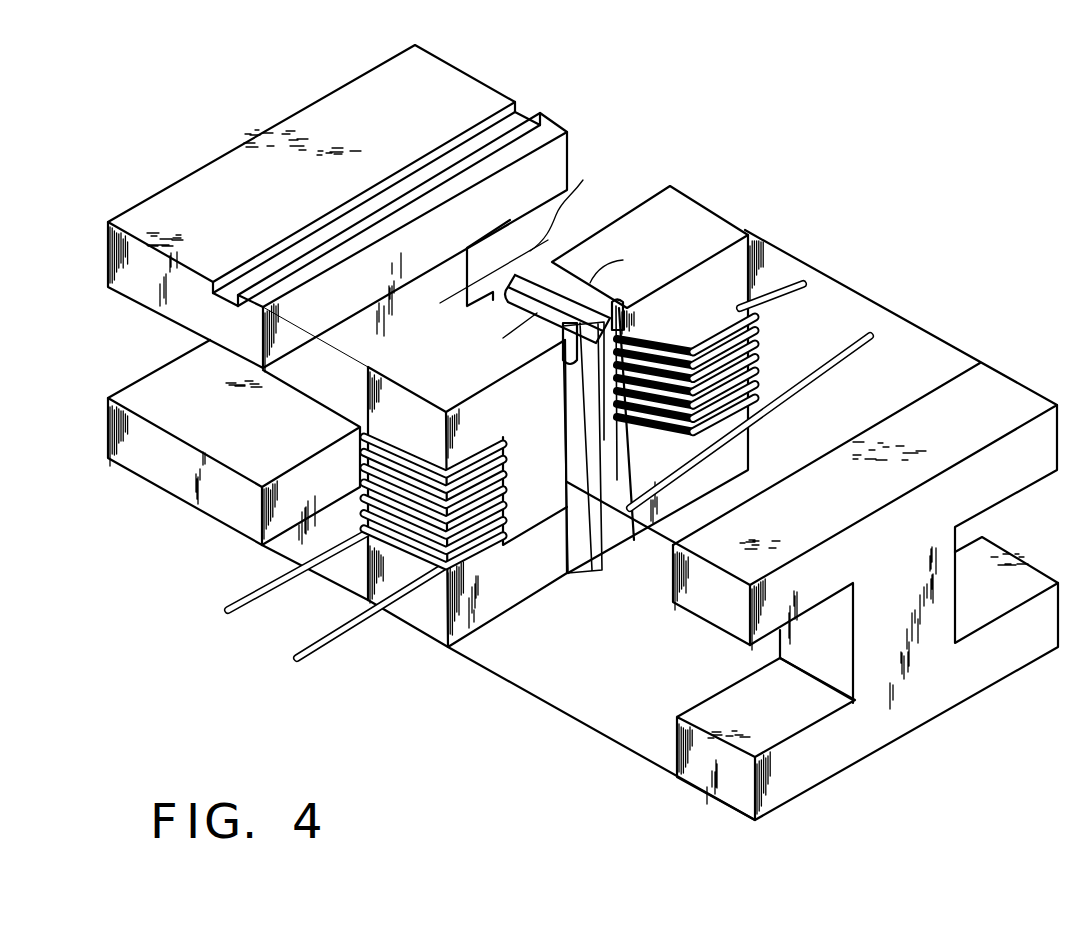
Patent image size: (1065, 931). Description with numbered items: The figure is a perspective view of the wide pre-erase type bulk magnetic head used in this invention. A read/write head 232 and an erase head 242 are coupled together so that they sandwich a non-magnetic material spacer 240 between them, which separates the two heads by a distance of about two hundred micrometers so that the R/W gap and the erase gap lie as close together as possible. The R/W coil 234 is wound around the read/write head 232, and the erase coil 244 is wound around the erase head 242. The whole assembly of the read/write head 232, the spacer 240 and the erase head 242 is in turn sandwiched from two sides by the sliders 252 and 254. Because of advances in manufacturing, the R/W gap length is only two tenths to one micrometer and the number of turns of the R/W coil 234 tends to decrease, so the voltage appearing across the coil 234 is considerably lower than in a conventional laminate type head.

The slider 252 is at (318, 100).
The slider 254 is at (806, 788).
The read/write head 232 is at (420, 632).
The R/W coil 234 is at (345, 575).
The non-magnetic material spacer 240 is at (597, 568).
The erase head 242 is at (728, 205).
The erase coil 244 is at (807, 337).